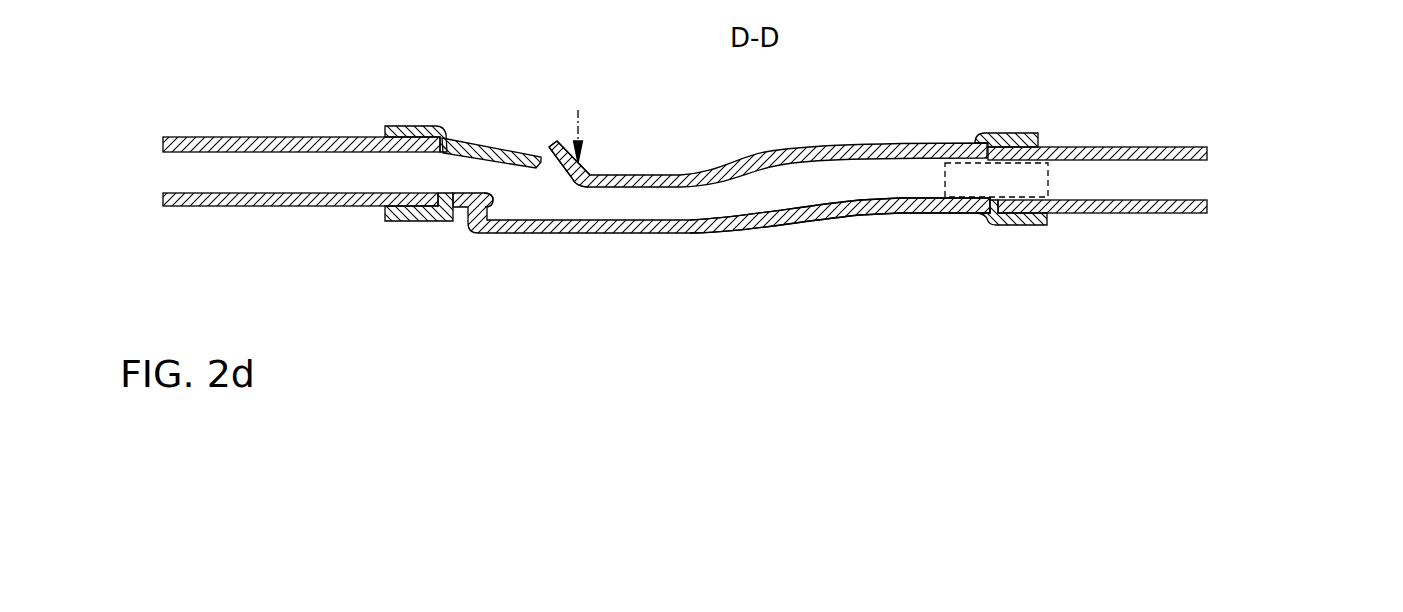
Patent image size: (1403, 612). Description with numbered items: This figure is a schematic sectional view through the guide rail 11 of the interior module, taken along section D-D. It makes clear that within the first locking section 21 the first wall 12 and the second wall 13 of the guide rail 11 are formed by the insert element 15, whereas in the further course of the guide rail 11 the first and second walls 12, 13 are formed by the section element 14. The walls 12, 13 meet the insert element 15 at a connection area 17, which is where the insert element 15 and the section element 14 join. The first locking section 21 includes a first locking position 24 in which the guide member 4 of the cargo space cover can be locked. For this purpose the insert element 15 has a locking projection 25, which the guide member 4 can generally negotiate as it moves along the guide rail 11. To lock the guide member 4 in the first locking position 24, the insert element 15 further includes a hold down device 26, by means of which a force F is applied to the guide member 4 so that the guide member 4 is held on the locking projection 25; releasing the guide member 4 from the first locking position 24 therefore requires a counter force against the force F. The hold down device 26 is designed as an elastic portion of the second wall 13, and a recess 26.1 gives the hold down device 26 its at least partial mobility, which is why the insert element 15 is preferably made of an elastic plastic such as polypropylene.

The guide member 4 is at (957, 162).
The guide rail 11 is at (1163, 224).
The first wall 12 is at (1132, 234).
The second wall 13 is at (1077, 125).
The section element 14 is at (1172, 200).
The insert element 15 is at (935, 212).
The connection area 17 is at (413, 137).
The first locking section 21 is at (452, 257).
The first locking position 24 is at (511, 161).
The locking projection 25 is at (493, 202).
The hold down device 26 is at (590, 175).
The recess 26.1 is at (541, 128).
The force F is at (578, 133).